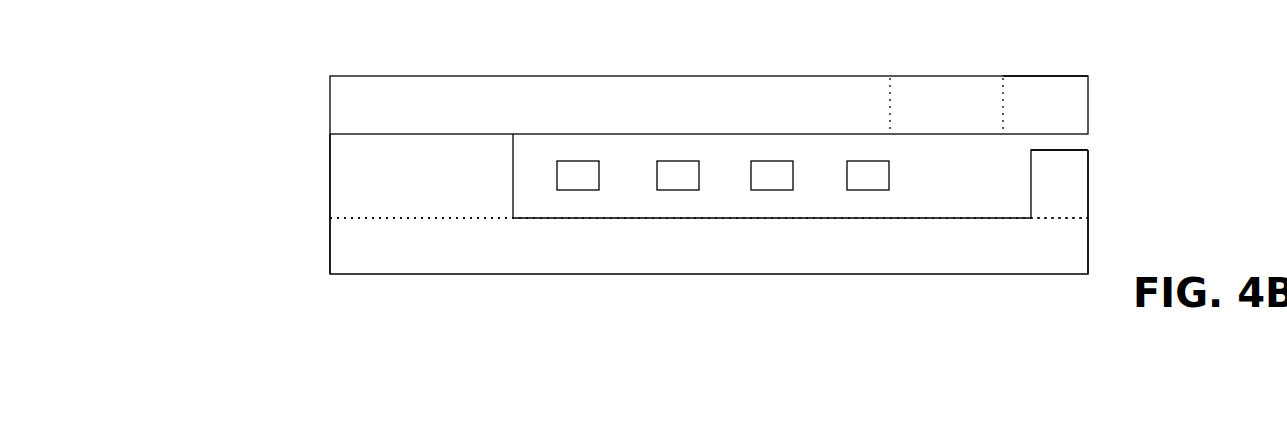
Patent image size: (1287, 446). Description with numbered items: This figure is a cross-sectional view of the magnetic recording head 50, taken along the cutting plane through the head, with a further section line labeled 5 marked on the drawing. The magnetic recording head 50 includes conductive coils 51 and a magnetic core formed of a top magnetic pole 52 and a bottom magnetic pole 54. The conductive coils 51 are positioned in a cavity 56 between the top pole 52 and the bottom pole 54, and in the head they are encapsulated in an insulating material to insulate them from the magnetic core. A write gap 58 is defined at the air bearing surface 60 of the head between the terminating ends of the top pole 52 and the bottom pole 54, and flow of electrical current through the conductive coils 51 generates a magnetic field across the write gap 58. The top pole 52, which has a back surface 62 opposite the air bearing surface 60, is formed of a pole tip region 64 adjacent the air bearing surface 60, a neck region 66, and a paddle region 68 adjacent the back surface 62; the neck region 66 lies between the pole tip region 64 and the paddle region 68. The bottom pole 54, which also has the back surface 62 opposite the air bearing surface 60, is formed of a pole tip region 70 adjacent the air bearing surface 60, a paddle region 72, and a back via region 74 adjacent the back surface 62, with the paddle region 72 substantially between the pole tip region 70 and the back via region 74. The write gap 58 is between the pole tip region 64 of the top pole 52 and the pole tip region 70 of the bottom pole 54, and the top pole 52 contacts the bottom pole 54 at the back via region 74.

The magnetic recording head 50 is at (1202, 131).
The conductive coils 51 is at (589, 186).
The top magnetic pole 52 is at (463, 76).
The bottom magnetic pole 54 is at (463, 274).
The cavity 56 is at (969, 188).
The write gap 58 is at (1063, 145).
The air bearing surface 60 is at (1088, 205).
The back surface 62 is at (330, 204).
The pole tip region 64 is at (1055, 110).
The neck region 66 is at (952, 110).
The paddle region 68 is at (855, 110).
The pole tip region 70 is at (1062, 188).
The paddle region 72 is at (805, 252).
The back via region 74 is at (425, 185).
The section line 5- 5 is at (724, 54).